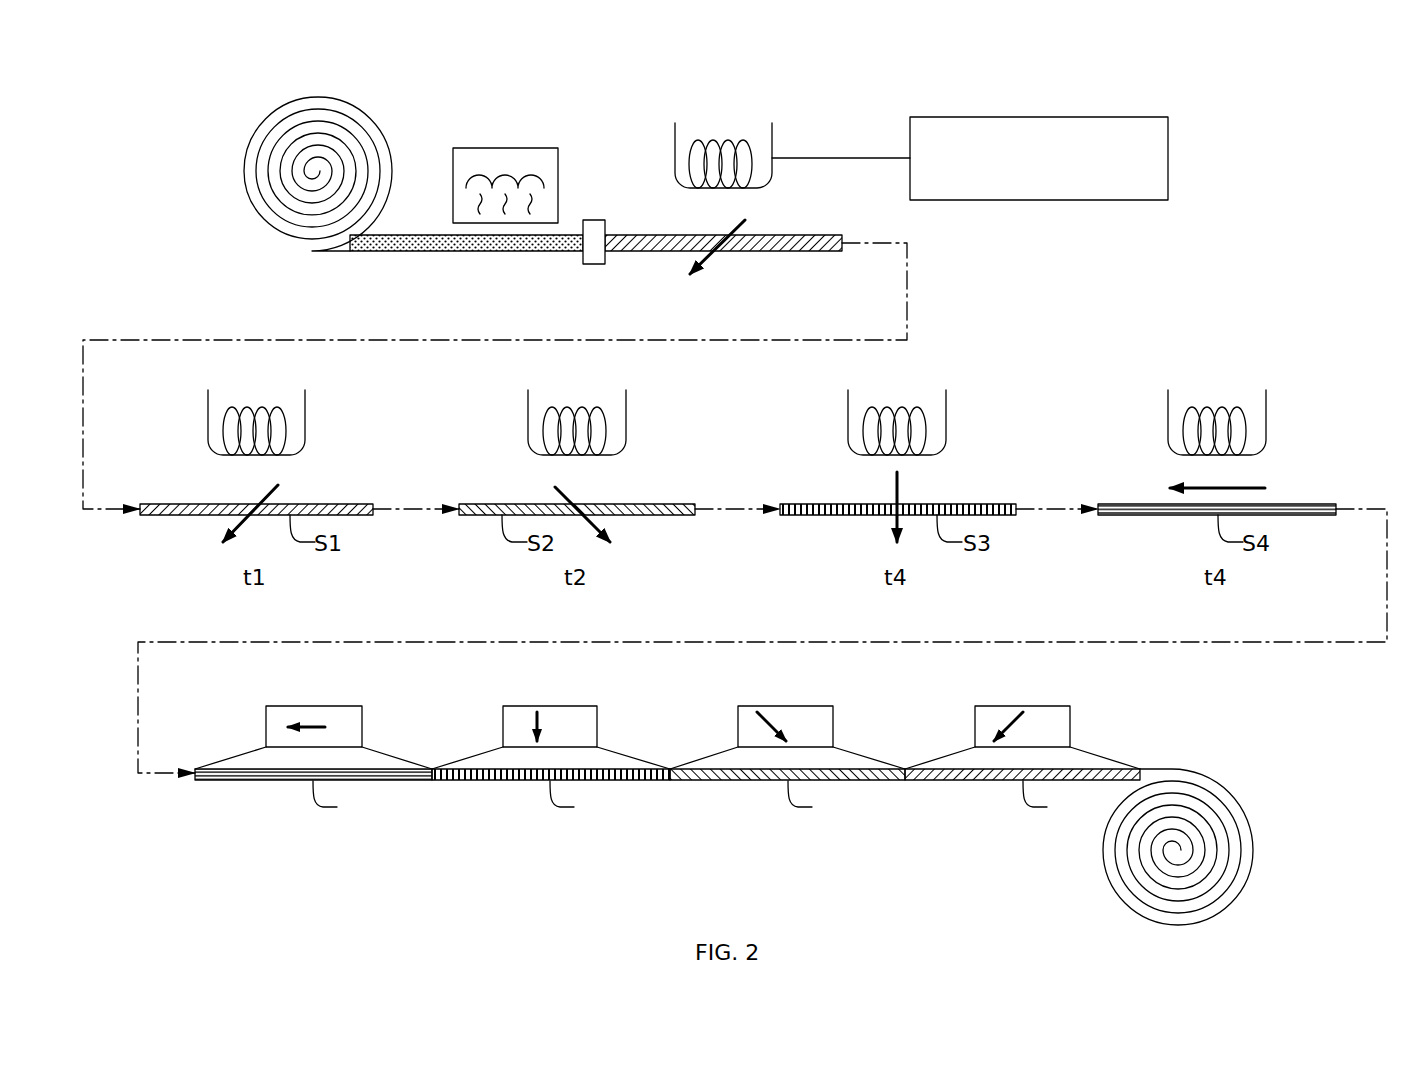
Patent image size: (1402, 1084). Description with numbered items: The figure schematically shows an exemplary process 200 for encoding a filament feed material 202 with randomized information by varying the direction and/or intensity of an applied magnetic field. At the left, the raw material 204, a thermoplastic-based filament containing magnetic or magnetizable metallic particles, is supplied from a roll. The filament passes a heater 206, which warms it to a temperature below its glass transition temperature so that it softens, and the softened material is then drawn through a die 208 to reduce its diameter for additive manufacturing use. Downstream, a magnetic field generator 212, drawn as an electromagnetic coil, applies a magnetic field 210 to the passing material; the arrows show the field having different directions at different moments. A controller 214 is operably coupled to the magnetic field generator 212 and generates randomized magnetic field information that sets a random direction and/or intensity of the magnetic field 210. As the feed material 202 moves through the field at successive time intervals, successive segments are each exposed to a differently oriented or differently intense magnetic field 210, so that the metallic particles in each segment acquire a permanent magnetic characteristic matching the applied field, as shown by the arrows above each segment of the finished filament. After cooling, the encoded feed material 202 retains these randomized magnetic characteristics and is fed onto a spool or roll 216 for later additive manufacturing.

The process 200 is at (246, 90).
The feed material 202 is at (1093, 822).
The raw material 204 is at (233, 171).
The heater 206 is at (503, 148).
The die 208 is at (594, 220).
The magnetic field 210 is at (745, 221).
The magnetic field generator 212 is at (772, 130).
The controller 214 is at (1052, 168).
The spool or roll 216 is at (1252, 843).